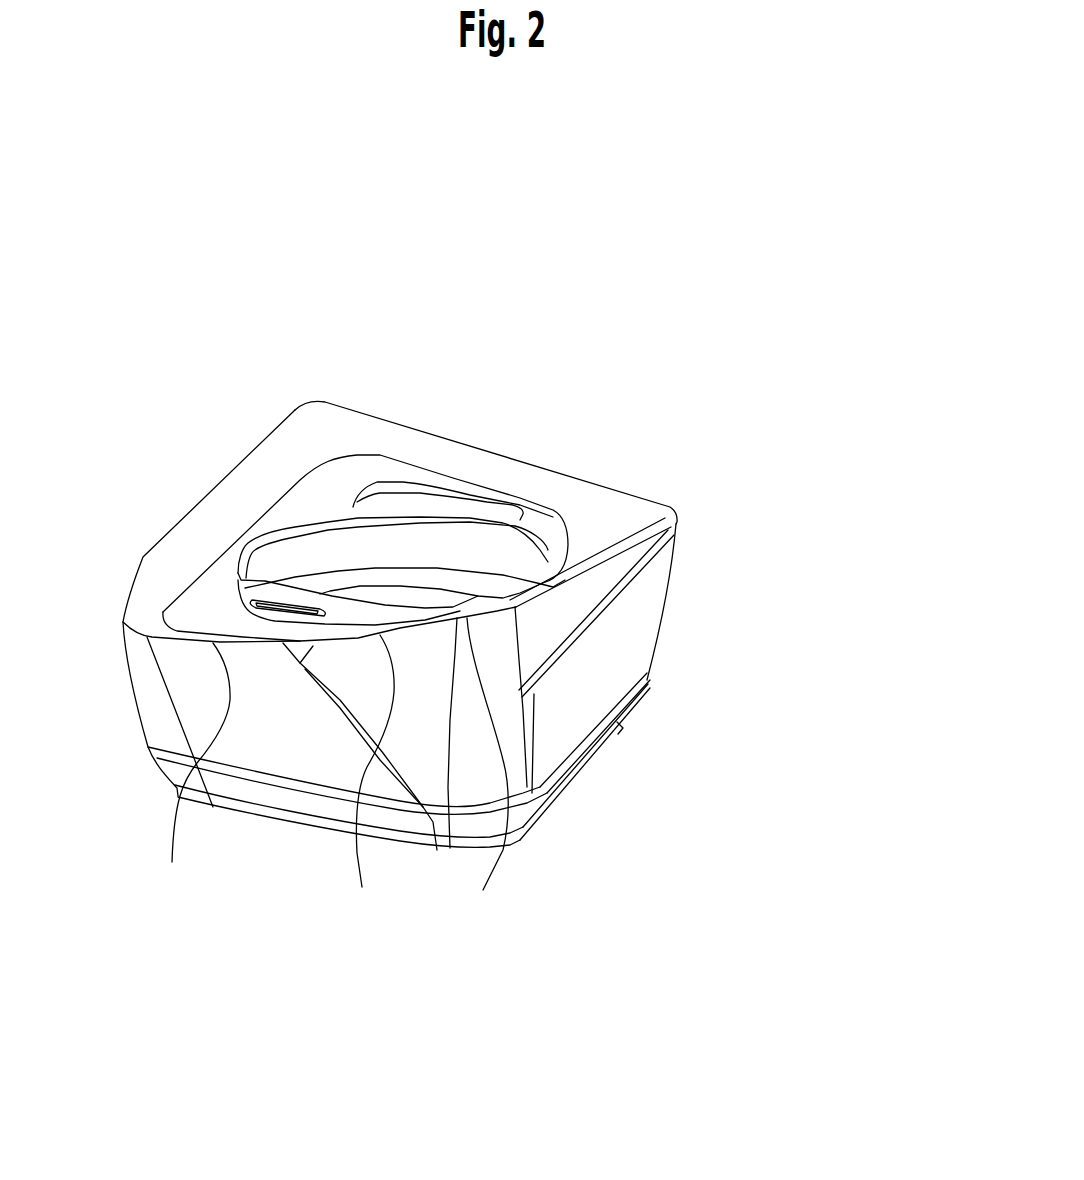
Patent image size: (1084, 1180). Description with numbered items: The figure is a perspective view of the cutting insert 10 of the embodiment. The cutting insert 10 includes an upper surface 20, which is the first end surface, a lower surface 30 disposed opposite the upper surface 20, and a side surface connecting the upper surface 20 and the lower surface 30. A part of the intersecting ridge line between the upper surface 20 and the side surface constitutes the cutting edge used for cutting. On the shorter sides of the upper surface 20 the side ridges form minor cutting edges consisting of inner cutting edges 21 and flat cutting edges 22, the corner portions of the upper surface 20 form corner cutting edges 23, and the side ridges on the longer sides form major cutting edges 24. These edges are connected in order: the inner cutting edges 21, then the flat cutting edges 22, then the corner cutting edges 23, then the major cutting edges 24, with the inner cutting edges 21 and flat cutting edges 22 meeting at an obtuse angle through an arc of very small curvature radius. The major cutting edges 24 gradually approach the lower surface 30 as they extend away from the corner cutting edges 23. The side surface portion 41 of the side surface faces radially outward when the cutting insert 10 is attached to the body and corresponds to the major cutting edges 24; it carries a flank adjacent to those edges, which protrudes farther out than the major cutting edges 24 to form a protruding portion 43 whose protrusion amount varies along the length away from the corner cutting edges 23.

The cutting insert 10 is at (568, 409).
The upper surface 20 is at (262, 472).
The inner cutting edges 21 is at (192, 785).
The flat cutting edges 22 is at (373, 794).
The corner cutting edges 23 is at (483, 786).
The major cutting edges 24 is at (610, 581).
The lower surface 30 is at (293, 823).
The side surface portion 41 is at (627, 653).
The protruding portion 43 is at (457, 653).